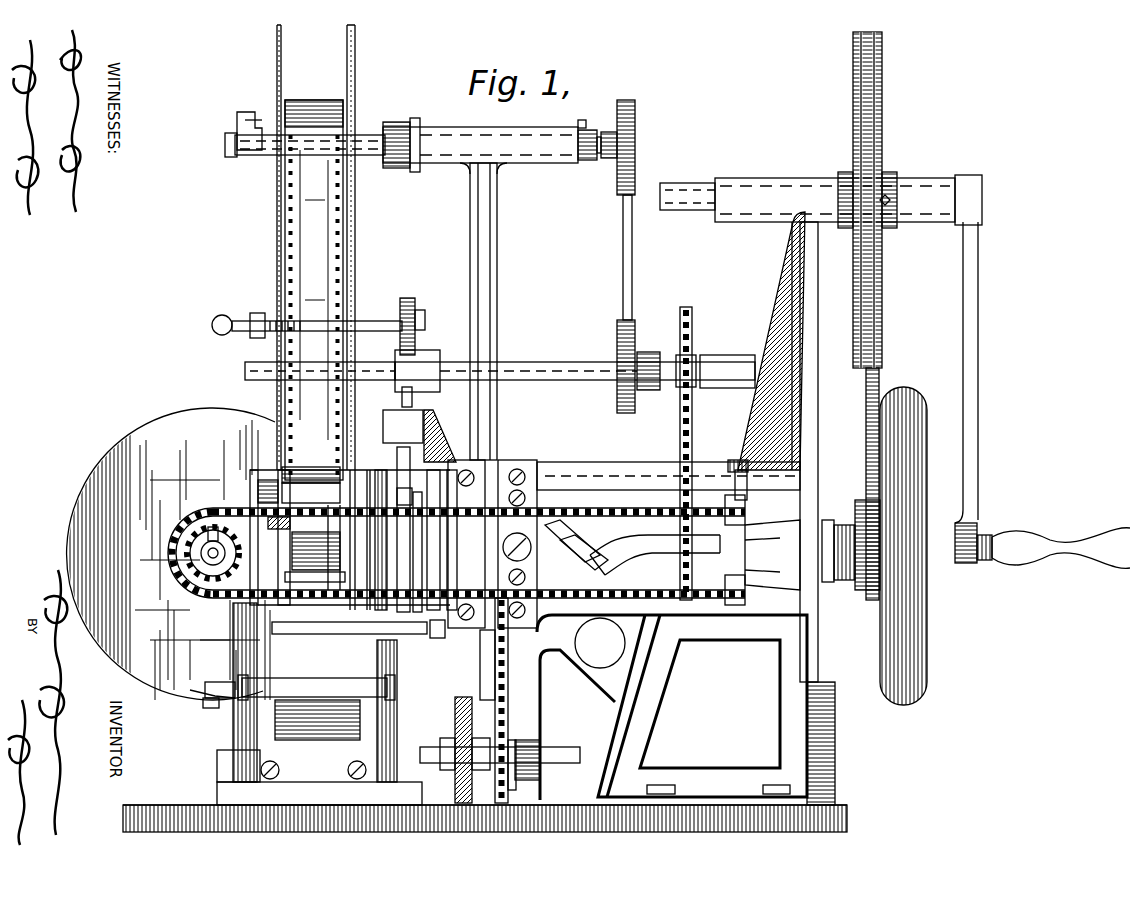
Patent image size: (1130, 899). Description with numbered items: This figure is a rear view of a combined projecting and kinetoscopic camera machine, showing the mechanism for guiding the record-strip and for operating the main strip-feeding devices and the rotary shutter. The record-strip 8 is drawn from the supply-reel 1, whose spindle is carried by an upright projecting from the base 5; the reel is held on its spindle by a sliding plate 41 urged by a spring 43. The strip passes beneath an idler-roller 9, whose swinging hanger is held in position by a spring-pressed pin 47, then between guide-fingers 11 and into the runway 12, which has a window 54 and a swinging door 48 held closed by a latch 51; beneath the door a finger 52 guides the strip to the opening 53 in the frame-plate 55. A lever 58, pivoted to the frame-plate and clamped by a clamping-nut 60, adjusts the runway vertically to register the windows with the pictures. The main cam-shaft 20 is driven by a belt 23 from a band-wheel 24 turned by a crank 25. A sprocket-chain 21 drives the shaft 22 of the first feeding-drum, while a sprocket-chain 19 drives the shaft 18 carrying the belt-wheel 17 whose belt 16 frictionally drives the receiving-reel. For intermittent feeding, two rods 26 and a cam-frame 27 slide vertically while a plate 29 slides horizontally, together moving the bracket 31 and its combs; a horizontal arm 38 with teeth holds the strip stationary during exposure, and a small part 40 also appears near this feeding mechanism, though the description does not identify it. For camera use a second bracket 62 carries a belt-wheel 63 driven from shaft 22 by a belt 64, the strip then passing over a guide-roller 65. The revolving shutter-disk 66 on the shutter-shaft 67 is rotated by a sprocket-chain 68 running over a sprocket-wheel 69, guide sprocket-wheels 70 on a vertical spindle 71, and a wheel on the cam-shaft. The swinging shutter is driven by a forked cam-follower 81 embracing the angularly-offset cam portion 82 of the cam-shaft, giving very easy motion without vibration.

The supply-reel 1 is at (350, 72).
The base 5 is at (665, 664).
The record-strip 8 is at (314, 290).
The idler-roller 9 is at (400, 320).
The guide-fingers 11 is at (245, 372).
The runway 12 is at (311, 487).
The belt 16 is at (485, 700).
The belt-wheel 17 is at (460, 706).
The shaft 18 is at (553, 754).
The sprocket-chain 19 is at (490, 663).
The main cam-shaft 20 is at (660, 540).
The sprocket-chain 21 is at (698, 430).
The shaft 22 is at (590, 364).
The belt 23 is at (880, 382).
The band-wheel 24 is at (883, 104).
The crank 25 is at (976, 208).
The rods 26 is at (396, 450).
The cam-frame 27 is at (402, 490).
The plate 29 is at (498, 552).
The bracket 31 is at (469, 544).
The horizontal arm 38 is at (228, 688).
The pin 40 is at (440, 636).
The sliding plates 41 is at (237, 126).
The springs 43 is at (268, 120).
The spring-pressed pins 47 is at (222, 336).
The swinging door 48 is at (315, 582).
The latch 51 is at (285, 528).
The finger 52 is at (302, 634).
The opening 53 is at (358, 712).
The window 54 is at (316, 551).
The frame-plate 55 is at (233, 617).
The lever 58 is at (212, 704).
The clamping-nut 60 is at (196, 692).
The second bracket 62 is at (497, 275).
The belt-wheel 63 is at (636, 137).
The belt 64 is at (632, 252).
The guide-roller 65 is at (316, 686).
The shutter-disk 66 is at (171, 554).
The shutter-shaft 67 is at (221, 553).
The sprocket-chain 68 is at (592, 490).
The sprocket-wheel 69 is at (455, 553).
The guide sprocket-wheels 70 is at (748, 513).
The vertical spindle 71 is at (740, 492).
The cam-follower 81 is at (583, 543).
The cam portion 82 is at (605, 545).